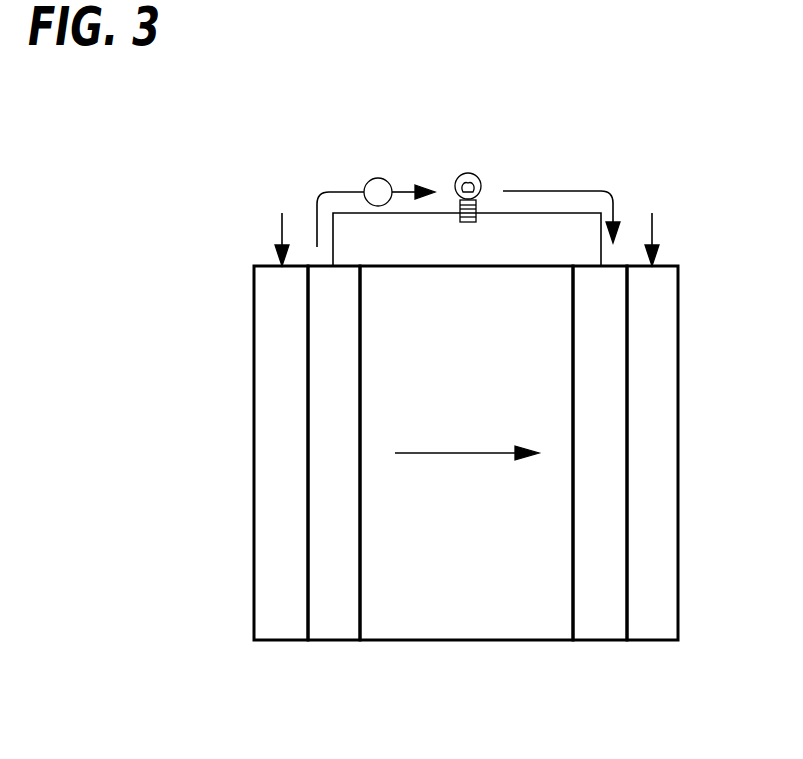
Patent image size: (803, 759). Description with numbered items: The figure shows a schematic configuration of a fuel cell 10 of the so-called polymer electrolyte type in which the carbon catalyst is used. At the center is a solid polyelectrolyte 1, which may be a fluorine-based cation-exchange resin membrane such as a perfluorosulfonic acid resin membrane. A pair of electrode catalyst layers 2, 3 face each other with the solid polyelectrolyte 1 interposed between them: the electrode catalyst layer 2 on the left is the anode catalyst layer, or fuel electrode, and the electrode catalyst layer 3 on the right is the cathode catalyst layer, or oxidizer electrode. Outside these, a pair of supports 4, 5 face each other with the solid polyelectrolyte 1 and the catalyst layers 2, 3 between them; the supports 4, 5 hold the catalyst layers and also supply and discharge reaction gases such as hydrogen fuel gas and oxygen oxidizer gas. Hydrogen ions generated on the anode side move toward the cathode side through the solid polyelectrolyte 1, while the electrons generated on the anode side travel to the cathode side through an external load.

The fuel cell 10 is at (189, 172).
The solid polyelectrolyte 1 is at (474, 625).
The anode catalyst layer 2 is at (344, 625).
The cathode catalyst layer 3 is at (602, 625).
The support 4 is at (291, 625).
The support 5 is at (656, 625).